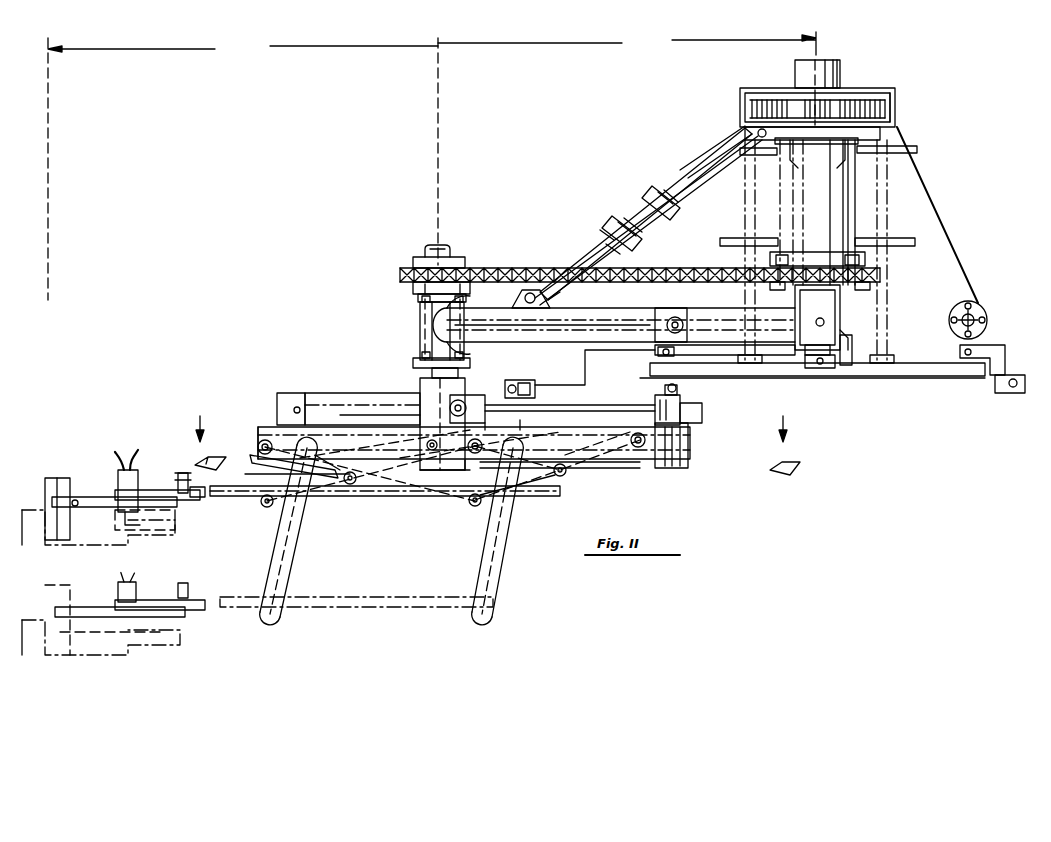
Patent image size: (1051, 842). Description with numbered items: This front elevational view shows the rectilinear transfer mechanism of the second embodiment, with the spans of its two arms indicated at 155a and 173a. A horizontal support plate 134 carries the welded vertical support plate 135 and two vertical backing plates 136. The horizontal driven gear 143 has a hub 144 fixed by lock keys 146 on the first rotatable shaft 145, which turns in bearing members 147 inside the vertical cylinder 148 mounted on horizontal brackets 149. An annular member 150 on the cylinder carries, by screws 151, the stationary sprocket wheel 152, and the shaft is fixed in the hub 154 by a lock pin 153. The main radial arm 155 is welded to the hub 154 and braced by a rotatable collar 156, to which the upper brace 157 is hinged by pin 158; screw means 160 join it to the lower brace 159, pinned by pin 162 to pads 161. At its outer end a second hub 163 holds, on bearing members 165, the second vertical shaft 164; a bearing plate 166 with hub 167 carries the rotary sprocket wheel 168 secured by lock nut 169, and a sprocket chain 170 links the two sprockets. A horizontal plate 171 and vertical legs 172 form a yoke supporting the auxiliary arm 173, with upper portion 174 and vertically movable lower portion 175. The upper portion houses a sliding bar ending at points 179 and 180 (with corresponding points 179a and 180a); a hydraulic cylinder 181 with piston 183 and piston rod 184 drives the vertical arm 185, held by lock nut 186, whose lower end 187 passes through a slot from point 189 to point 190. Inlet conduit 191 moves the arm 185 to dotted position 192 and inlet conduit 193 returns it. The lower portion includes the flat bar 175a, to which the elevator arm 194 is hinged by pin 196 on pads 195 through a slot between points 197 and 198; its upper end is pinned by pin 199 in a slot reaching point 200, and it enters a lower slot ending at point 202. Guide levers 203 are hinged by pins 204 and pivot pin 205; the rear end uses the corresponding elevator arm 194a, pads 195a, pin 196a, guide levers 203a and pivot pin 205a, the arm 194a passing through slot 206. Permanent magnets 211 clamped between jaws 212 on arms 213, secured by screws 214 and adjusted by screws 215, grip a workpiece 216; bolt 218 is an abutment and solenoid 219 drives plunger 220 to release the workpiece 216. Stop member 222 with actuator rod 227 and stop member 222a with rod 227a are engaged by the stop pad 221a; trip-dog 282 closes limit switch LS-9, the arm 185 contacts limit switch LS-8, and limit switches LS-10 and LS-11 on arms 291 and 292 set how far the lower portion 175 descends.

The dimension 173a is at (243, 169).
The dimension 155a is at (627, 148).
The first rotatable shaft 145 is at (805, 74).
The lock keys 146 is at (828, 60).
The hub 144 is at (842, 66).
The horizontal driven gear 143 is at (880, 90).
The second vertical sleeve or hub 163 is at (895, 95).
The rotatable collar 156 is at (880, 132).
The pin 158 is at (755, 136).
The upper brace or arm 157 is at (705, 178).
The screw means 160 is at (640, 222).
The lower brace or arm 159 is at (606, 244).
The sprocket chain 170 is at (535, 285).
The horizontal brackets 149 is at (905, 151).
The vertical backing plates 136 is at (750, 197).
The bearing members 147 is at (830, 190).
The vertically disposed cylinder 148 is at (848, 194).
The vertical support plate 135 is at (945, 225).
The annular member 150 is at (866, 259).
The pads 161 is at (522, 300).
The pin 162 is at (545, 298).
The screws 151 is at (778, 290).
The inner or main horizontal radial arm 155 is at (630, 310).
The stop pad 221a is at (655, 328).
The actuator rod 227 is at (678, 310).
The stop member 222 is at (698, 324).
The stationary sprocket wheel 152 is at (838, 292).
The lock pin 153 is at (825, 322).
The vertical sleeve or hub 154 is at (840, 333).
The arm 292 is at (585, 360).
The limit switch LS-11 is at (520, 372).
The horizontal support plate 134 is at (943, 378).
The limit switch LS-9 is at (815, 370).
The trip-dog 282 is at (855, 368).
The stop member 222a is at (978, 305).
The rod 227a is at (955, 308).
The arm 291 is at (1000, 345).
The limit switch LS-10 is at (1003, 393).
The lock nut 169 is at (445, 250).
The rotary sprocket wheel 168 is at (463, 262).
The hub 167 is at (413, 286).
The bearing plate 166 is at (418, 296).
The bearing members 165 is at (420, 300).
The second vertical shaft 164 is at (418, 348).
The horizontal plate 171 is at (462, 376).
The inlet conduit 191 is at (462, 402).
The pin 199 is at (445, 445).
The inlet conduit 193 is at (298, 408).
The hydraulic fluid cylinder 181 is at (355, 388).
The piston 183 is at (395, 395).
The piston rod 184 is at (590, 404).
The lock nut 186 is at (658, 396).
The vertical arm 185 is at (678, 388).
The limit switch LS-8 is at (703, 412).
The point 180 is at (474, 443).
The frame end 180a is at (280, 430).
The second horizontal or auxiliary radial arm 173 is at (232, 427).
The upper inner portion 174 is at (665, 460).
The point 179 is at (688, 455).
The lower end 187 is at (688, 447).
The point 190 is at (690, 437).
The pivot 179a is at (605, 442).
The point 189 is at (500, 427).
The dotted position 192 is at (542, 427).
The rear point 202 is at (640, 462).
The lower outer portion 175 is at (395, 490).
The elongated flat bar 175a is at (208, 502).
The pins 204 is at (258, 447).
The guide levers 203 is at (260, 460).
The point 197 is at (250, 474).
The elevator arm 194 is at (375, 470).
The pivot pin 205 is at (352, 485).
The point 198 is at (330, 490).
The pin 196 is at (262, 504).
The pads 195 is at (285, 503).
The point 200 is at (442, 475).
The vertical legs 172 is at (455, 471).
The slot 206 is at (470, 490).
The pin 196a is at (472, 508).
The pads 195a is at (495, 508).
The pivot pin 205a is at (572, 476).
The guide levers 203a is at (552, 482).
The elevator arm 194a is at (578, 478).
The workpiece 216 is at (85, 540).
The permanent magnets 211 is at (48, 482).
The jaws 212 is at (52, 500).
The screws 215 is at (77, 500).
The arms 213 is at (118, 480).
The solenoid 219 is at (118, 590).
The bolt 218 is at (183, 472).
The screws 214 is at (132, 486).
The plunger 220 is at (135, 527).